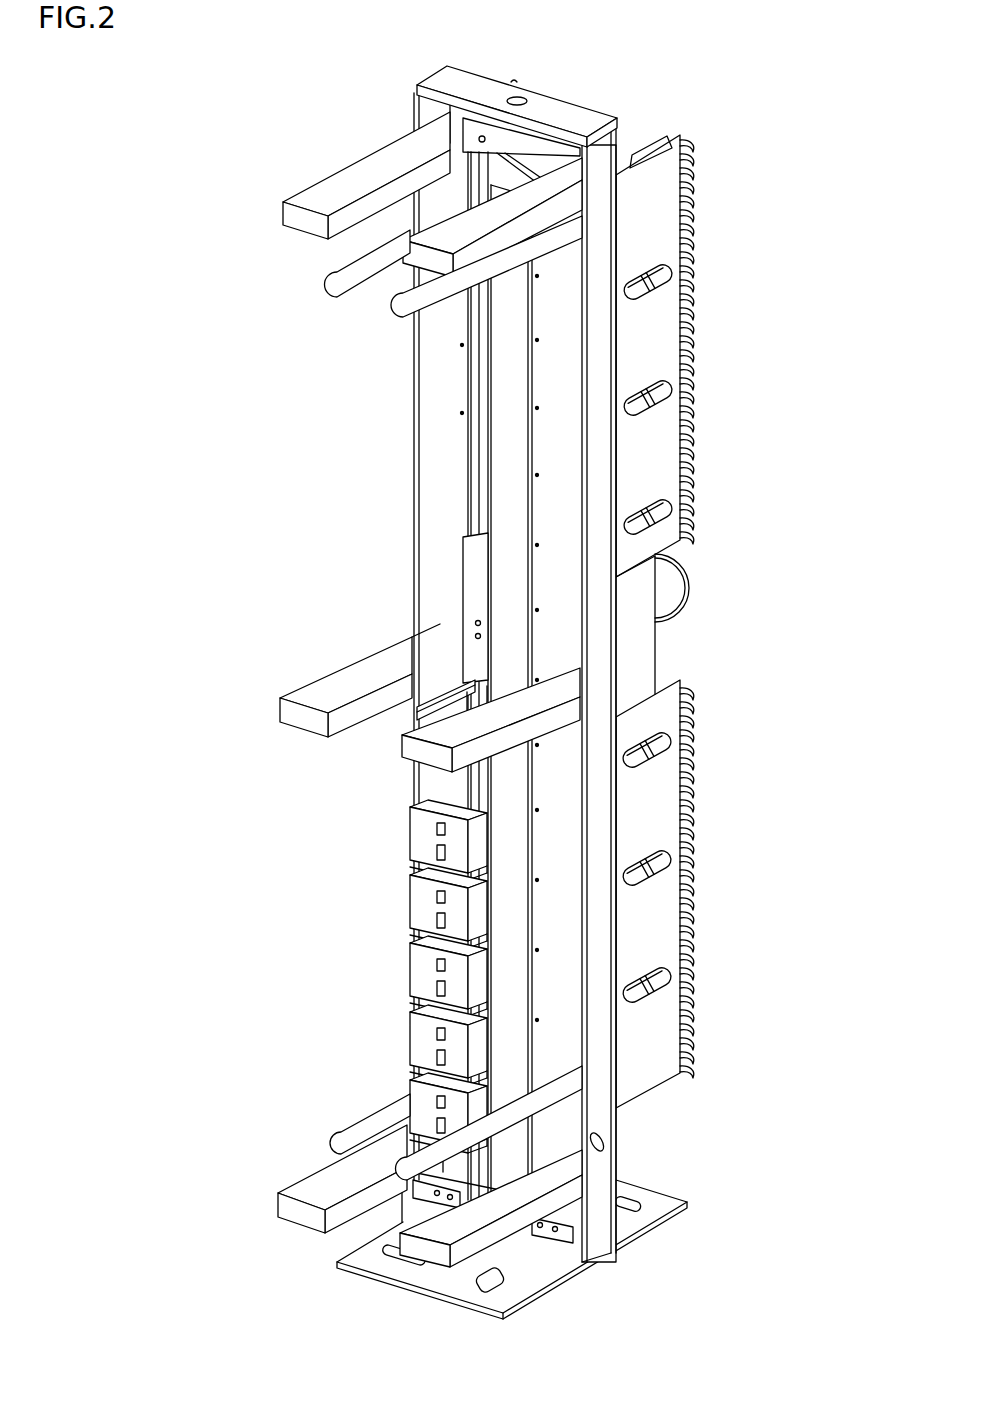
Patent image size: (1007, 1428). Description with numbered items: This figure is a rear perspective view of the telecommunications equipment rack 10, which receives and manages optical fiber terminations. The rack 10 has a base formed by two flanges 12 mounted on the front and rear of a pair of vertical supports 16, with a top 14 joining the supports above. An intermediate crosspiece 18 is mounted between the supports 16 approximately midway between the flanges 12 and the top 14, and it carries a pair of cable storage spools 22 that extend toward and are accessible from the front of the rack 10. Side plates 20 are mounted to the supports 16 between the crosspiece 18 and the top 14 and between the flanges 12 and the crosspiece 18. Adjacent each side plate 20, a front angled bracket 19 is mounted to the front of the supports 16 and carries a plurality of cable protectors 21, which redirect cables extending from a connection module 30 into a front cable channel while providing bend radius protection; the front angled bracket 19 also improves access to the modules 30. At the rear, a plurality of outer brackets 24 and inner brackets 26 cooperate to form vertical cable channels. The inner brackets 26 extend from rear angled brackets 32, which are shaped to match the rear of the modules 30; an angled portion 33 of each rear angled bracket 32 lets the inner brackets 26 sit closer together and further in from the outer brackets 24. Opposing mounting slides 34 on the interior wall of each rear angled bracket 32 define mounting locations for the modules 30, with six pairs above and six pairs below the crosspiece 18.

The telecommunications equipment rack 10 is at (296, 152).
The flange 12 is at (672, 1200).
The top 14 is at (440, 78).
The vertical support 16 is at (432, 108).
The intermediate crosspiece 18 is at (642, 652).
The front angled bracket 19 is at (627, 172).
The side plate 20 is at (668, 332).
The cable protector 21 is at (688, 143).
The cable storage spool 22 is at (672, 601).
The outer bracket 24 is at (300, 215).
The inner bracket 26 is at (337, 287).
The connection module 30 is at (421, 849).
The rear angled bracket 32 is at (430, 475).
The angled portion 33 is at (412, 530).
The mounting slide 34 is at (432, 700).